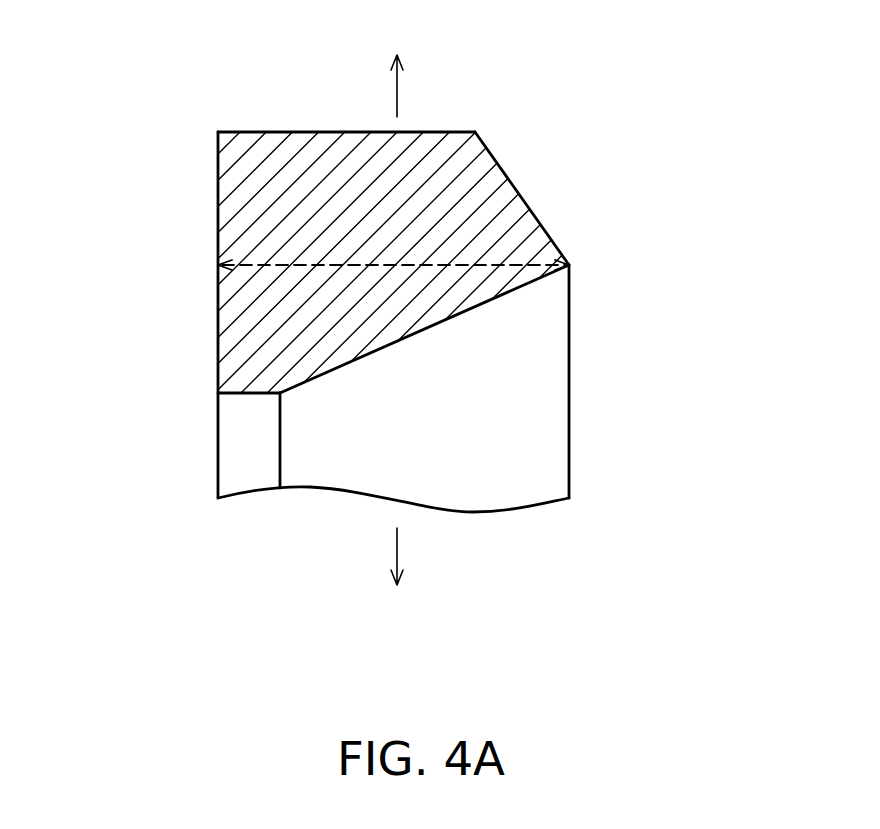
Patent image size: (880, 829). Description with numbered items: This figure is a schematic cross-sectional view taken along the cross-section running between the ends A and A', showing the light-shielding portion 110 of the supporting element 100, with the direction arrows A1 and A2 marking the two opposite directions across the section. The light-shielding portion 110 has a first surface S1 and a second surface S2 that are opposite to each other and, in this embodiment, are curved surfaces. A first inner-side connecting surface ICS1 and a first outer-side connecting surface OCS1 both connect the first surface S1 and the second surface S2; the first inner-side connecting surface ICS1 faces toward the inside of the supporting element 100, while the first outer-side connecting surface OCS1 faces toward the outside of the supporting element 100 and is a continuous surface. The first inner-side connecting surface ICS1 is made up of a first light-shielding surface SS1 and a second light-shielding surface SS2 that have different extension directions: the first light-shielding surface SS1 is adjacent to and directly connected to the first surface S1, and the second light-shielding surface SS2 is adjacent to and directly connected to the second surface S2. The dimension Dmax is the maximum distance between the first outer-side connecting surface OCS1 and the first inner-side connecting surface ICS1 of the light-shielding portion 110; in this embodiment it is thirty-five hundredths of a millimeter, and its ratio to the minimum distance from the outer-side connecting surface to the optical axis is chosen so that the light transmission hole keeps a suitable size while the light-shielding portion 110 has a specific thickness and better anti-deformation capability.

The supporting element 100 is at (360, 341).
The light-shielding portion 110 is at (720, 661).
The first surface S1 is at (258, 443).
The second surface S2 is at (280, 130).
The first inner-side connecting surface ICS1 is at (490, 360).
The first light-shielding surface SS1 is at (480, 341).
The second light-shielding surface SS2 is at (520, 197).
The first outer-side connecting surface OCS1 is at (218, 232).
The maximum distance Dmax is at (218, 297).
The cross-section end A is at (219, 78).
The cross-section end A' is at (566, 80).
The first direction A1 is at (395, 580).
The second direction A2 is at (398, 69).